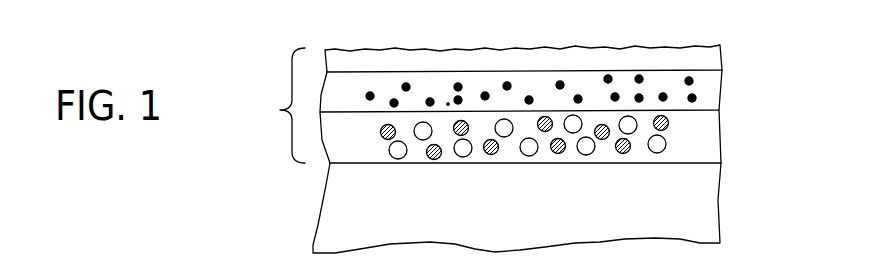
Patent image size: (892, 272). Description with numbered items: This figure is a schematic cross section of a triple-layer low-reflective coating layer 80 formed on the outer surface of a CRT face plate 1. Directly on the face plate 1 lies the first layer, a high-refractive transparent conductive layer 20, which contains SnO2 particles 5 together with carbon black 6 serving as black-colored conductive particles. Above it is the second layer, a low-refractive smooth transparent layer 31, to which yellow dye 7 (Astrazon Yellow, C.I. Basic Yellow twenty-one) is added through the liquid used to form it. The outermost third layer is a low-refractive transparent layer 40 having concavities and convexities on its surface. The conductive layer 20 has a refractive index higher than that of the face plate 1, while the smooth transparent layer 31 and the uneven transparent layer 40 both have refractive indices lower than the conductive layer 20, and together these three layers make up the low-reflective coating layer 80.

The face plate 1 is at (697, 211).
The triple-layer low-reflective coating layer 80 is at (522, 109).
The low-refractive transparent layer having concavities and convexities 40 is at (705, 62).
The low-refractive smooth transparent layer 31 is at (564, 56).
The high-refractive transparent conductive layer 20 is at (552, 164).
The yellow dye 7 is at (507, 86).
The carbon black 6 is at (488, 155).
The SnO2 particles 5 is at (585, 155).